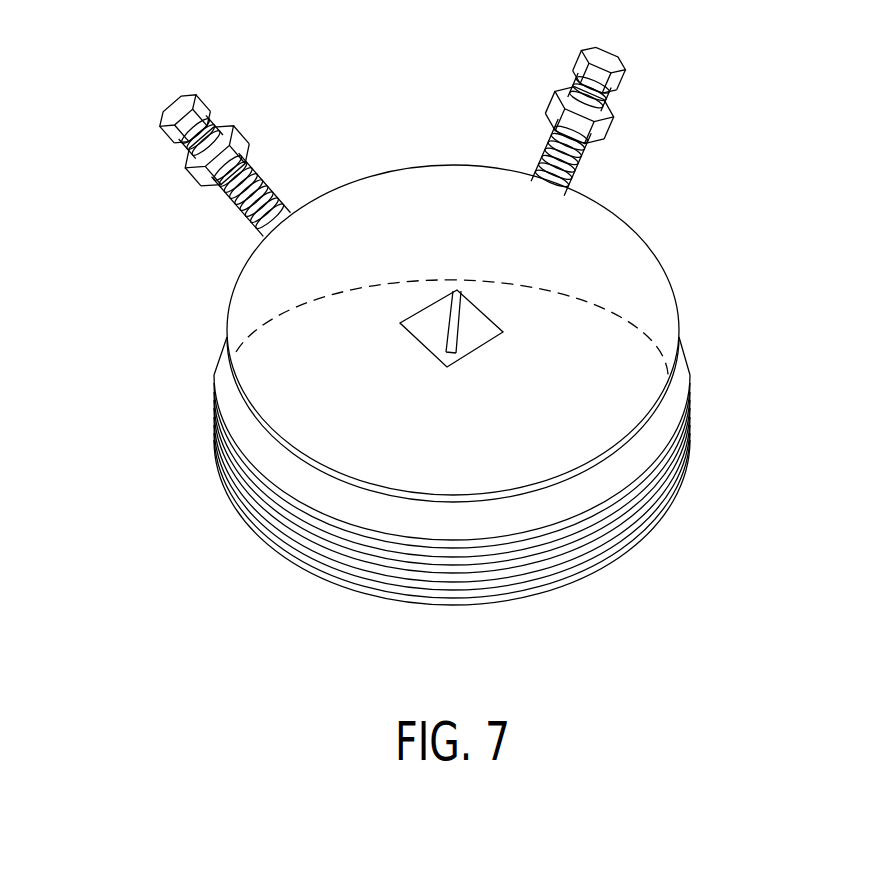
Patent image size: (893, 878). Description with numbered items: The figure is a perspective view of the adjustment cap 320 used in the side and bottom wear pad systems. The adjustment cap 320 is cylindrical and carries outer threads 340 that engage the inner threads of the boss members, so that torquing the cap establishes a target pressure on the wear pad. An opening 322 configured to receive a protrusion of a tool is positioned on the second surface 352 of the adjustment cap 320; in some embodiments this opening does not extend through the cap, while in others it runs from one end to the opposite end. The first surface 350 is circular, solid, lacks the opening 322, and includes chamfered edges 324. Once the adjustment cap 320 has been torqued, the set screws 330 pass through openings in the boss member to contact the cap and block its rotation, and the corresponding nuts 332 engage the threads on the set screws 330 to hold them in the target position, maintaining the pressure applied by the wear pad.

The adjustment cap 320 is at (607, 232).
The opening 322 is at (475, 342).
The chamfered edges 324 is at (643, 450).
The set screws 330 is at (162, 104).
The nuts 332 is at (250, 128).
The outer threads 340 is at (577, 555).
The first surface 350 is at (308, 568).
The second surface 352 is at (233, 318).